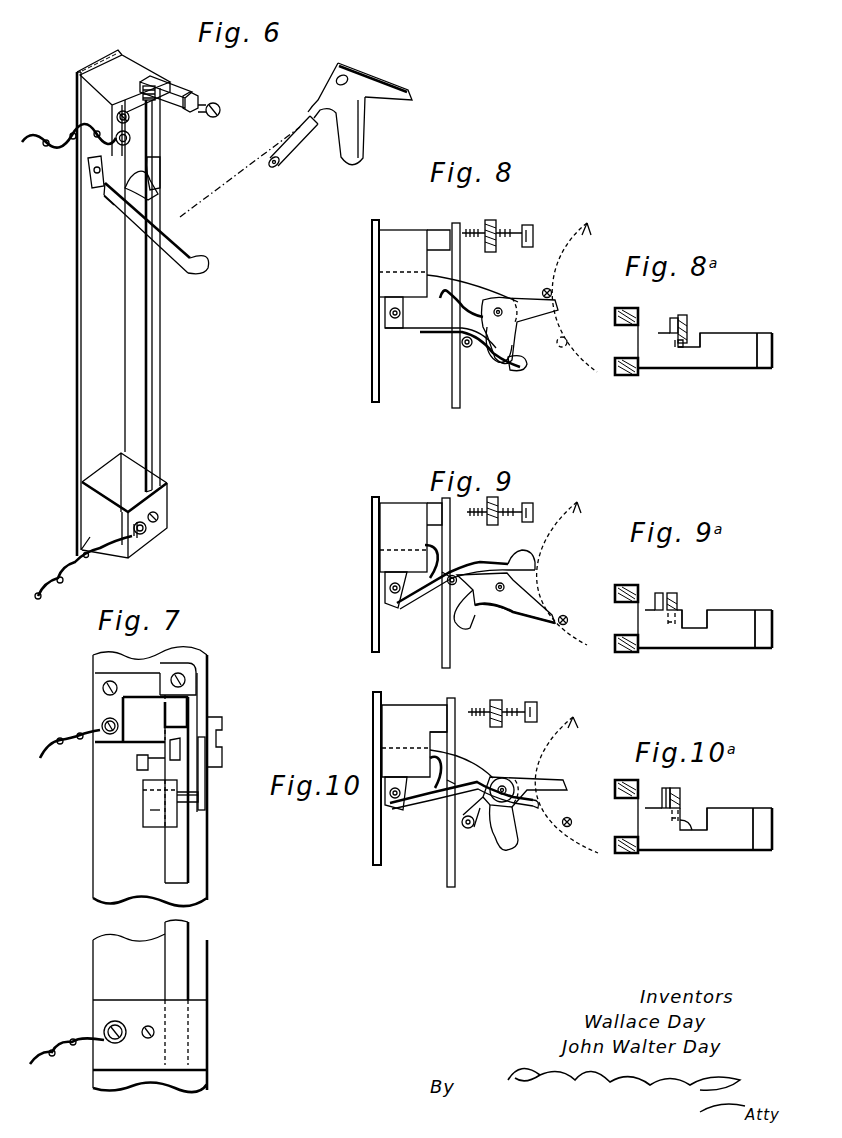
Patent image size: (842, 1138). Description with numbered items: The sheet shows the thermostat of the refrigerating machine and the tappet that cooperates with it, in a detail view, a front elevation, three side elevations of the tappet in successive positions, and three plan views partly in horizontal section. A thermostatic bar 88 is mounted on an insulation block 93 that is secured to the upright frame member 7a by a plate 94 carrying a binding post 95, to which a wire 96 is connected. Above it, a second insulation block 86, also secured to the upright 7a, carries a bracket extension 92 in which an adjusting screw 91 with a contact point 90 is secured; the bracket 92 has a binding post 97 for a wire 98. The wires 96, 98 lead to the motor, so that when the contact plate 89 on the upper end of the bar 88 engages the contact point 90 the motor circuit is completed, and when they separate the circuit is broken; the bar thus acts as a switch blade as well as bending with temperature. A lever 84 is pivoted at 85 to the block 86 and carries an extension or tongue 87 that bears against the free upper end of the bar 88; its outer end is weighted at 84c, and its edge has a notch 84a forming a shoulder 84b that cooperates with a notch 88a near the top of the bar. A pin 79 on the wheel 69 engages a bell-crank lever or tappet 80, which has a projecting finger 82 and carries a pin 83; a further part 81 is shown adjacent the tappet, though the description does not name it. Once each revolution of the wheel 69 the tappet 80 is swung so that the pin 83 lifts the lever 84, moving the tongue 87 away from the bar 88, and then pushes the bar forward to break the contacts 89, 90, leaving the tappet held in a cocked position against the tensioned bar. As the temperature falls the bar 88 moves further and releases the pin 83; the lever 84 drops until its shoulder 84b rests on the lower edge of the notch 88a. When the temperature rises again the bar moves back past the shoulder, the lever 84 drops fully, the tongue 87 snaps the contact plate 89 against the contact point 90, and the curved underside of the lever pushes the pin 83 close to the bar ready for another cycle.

In FIG. 6, the upright frame member 7a is at (88, 350).
In FIG. 7, the upright frame member 7a is at (102, 950).
In FIG. 8, the upright frame member 7a is at (372, 355).
In FIG. 9, the upright frame member 7a is at (372, 652).
In FIG. 10, the upright frame member 7a is at (373, 868).
In FIG. 8, the wheel 69 is at (581, 282).
In FIG. 9, the wheel 69 is at (568, 562).
In FIG. 10, the wheel 69 is at (575, 716).
In FIG. 8, the pin 79 is at (552, 292).
In FIG. 9, the pin 79 is at (566, 615).
In FIG. 10, the pin 79 is at (567, 830).
In FIG. 6, the bell-crank lever 80 is at (370, 78).
In FIG. 7, the bell-crank lever 80 is at (220, 745).
In FIG. 8, the bell-crank lever 80 is at (526, 305).
In FIG. 9, the bell-crank lever 80 is at (506, 598).
In FIG. 10, the bell-crank lever 80 is at (514, 778).
In FIG. 7, the spring strip 81 is at (210, 735).
In FIG. 8, the spring strip 81 is at (485, 290).
In FIG. 10, the spring strip 81 is at (466, 764).
In FIG. 6, the projecting finger 82 is at (356, 168).
In FIG. 7, the projecting finger 82 is at (200, 797).
In FIG. 8, the projecting finger 82 is at (499, 344).
In FIG. 9, the projecting finger 82 is at (468, 628).
In FIG. 10, the projecting finger 82 is at (510, 850).
In FIG. 6, the pin 83 is at (298, 140).
In FIG. 7, the pin 83 is at (140, 785).
In FIG. 8, the pin 83 is at (462, 347).
In FIG. 9, the pin 83 is at (450, 585).
In FIG. 10, the pin 83 is at (470, 830).
In FIG. 6, the lever 84 is at (113, 183).
In FIG. 7, the lever 84 is at (146, 800).
In FIG. 8, the lever 84 is at (500, 366).
In FIG. 8A, the lever 84 is at (655, 362).
In FIG. 9, the lever 84 is at (475, 566).
In FIG. 9A, the lever 84 is at (693, 618).
In FIG. 10, the lever 84 is at (420, 810).
In FIG. 10A, the lever 84 is at (660, 832).
In FIG. 6, the notch 84a is at (180, 198).
In FIG. 8A, the notch 84a is at (702, 347).
In FIG. 9A, the notch 84a is at (712, 622).
In FIG. 10A, the notch 84a is at (712, 815).
In FIG. 6, the shoulder 84b is at (106, 197).
In FIG. 8A, the shoulder 84b is at (674, 345).
In FIG. 9A, the shoulder 84b is at (684, 617).
In FIG. 10A, the shoulder 84b is at (686, 832).
In FIG. 6, the weighted outer end 84c is at (210, 262).
In FIG. 7, the weighted outer end 84c is at (152, 815).
In FIG. 8, the weighted outer end 84c is at (525, 365).
In FIG. 8A, the weighted outer end 84c is at (760, 370).
In FIG. 9, the weighted outer end 84c is at (520, 556).
In FIG. 9A, the weighted outer end 84c is at (758, 618).
In FIG. 10, the weighted outer end 84c is at (530, 808).
In FIG. 10A, the weighted outer end 84c is at (760, 840).
In FIG. 6, the pivot 85 is at (90, 168).
In FIG. 8, the pivot 85 is at (394, 312).
In FIG. 9, the pivot 85 is at (388, 590).
In FIG. 10, the pivot 85 is at (392, 797).
In FIG. 6, the insulation block 86 is at (92, 107).
In FIG. 7, the insulation block 86 is at (146, 742).
In FIG. 8, the insulation block 86 is at (386, 258).
In FIG. 9, the insulation block 86 is at (392, 525).
In FIG. 10, the insulation block 86 is at (390, 722).
In FIG. 6, the extension 87 is at (160, 160).
In FIG. 8, the extension 87 is at (445, 312).
In FIG. 8A, the extension 87 is at (672, 325).
In FIG. 9, the extension 87 is at (430, 560).
In FIG. 9A, the extension 87 is at (656, 596).
In FIG. 10, the extension 87 is at (438, 765).
In FIG. 10A, the extension 87 is at (664, 800).
In FIG. 6, the thermostatic bar 88 is at (160, 348).
In FIG. 7, the thermostatic bar 88 is at (185, 930).
In FIG. 8, the thermostatic bar 88 is at (452, 402).
In FIG. 8A, the thermostatic bar 88 is at (690, 315).
In FIG. 9, the thermostatic bar 88 is at (442, 655).
In FIG. 9A, the thermostatic bar 88 is at (672, 593).
In FIG. 10, the thermostatic bar 88 is at (450, 890).
In FIG. 10A, the thermostatic bar 88 is at (682, 792).
In FIG. 6, the notch 88a is at (160, 178).
In FIG. 7, the notch 88a is at (172, 735).
In FIG. 8A, the notch 88a is at (683, 347).
In FIG. 9, the notch 88a is at (450, 572).
In FIG. 9A, the notch 88a is at (670, 628).
In FIG. 10, the notch 88a is at (450, 786).
In FIG. 10A, the notch 88a is at (675, 826).
In FIG. 6, the contact plate 89 is at (170, 90).
In FIG. 8, the contact plate 89 is at (455, 236).
In FIG. 9, the contact plate 89 is at (445, 503).
In FIG. 10, the contact plate 89 is at (462, 706).
In FIG. 6, the contact point 90 is at (192, 94).
In FIG. 9, the contact point 90 is at (480, 508).
In FIG. 10, the contact point 90 is at (472, 708).
In FIG. 6, the adjusting screw 91 is at (220, 104).
In FIG. 7, the adjusting screw 91 is at (185, 672).
In FIG. 8, the adjusting screw 91 is at (534, 228).
In FIG. 9, the adjusting screw 91 is at (528, 502).
In FIG. 10, the adjusting screw 91 is at (535, 708).
In FIG. 6, the bracket extension 92 is at (150, 88).
In FIG. 7, the bracket extension 92 is at (102, 689).
In FIG. 8, the bracket extension 92 is at (486, 222).
In FIG. 9, the bracket extension 92 is at (504, 511).
In FIG. 10, the bracket extension 92 is at (494, 700).
In FIG. 6, the insulation block 93 is at (92, 500).
In FIG. 6, the plate 94 is at (166, 505).
In FIG. 7, the plate 94 is at (200, 1022).
In FIG. 6, the binding post 95 is at (146, 536).
In FIG. 7, the binding post 95 is at (110, 1045).
In FIG. 6, the wire 96 is at (58, 578).
In FIG. 7, the wire 96 is at (50, 1040).
In FIG. 6, the binding post 97 is at (116, 122).
In FIG. 7, the binding post 97 is at (102, 736).
In FIG. 6, the wire 98 is at (22, 142).
In FIG. 7, the wire 98 is at (40, 758).